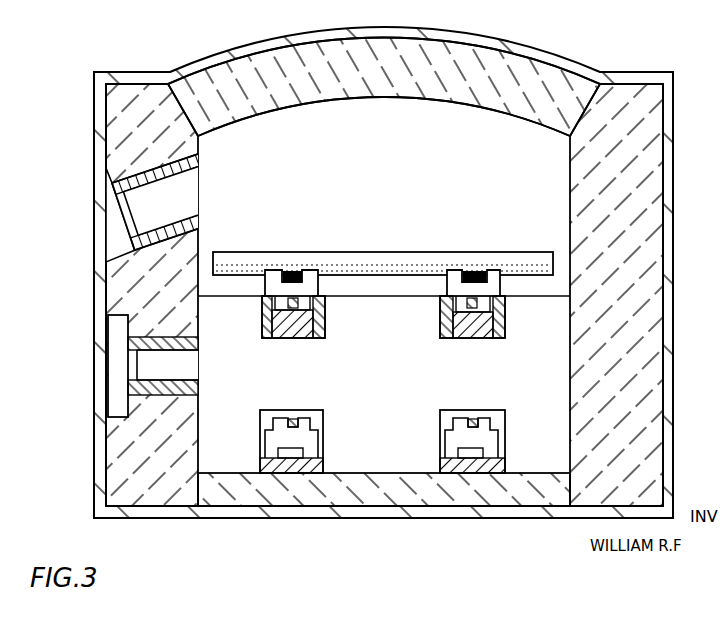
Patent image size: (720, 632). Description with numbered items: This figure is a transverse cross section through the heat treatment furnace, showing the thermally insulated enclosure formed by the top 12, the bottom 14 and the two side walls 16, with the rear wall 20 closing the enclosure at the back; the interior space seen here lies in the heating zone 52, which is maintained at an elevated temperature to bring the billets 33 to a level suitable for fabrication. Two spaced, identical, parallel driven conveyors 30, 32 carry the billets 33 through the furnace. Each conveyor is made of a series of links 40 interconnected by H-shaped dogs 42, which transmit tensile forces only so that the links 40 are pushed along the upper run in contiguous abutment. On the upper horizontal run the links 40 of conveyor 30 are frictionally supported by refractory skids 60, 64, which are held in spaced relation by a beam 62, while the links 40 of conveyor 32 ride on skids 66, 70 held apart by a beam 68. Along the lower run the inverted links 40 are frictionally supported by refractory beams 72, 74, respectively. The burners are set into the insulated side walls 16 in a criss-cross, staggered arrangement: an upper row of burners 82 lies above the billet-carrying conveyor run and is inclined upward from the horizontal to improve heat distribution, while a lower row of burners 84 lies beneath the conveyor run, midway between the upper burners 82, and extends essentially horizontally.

The top 12 is at (317, 36).
The bottom 14 is at (286, 510).
The side walls 16 is at (95, 158).
The rear wall 20 is at (324, 147).
The conveyor 30 is at (292, 268).
The conveyor 32 is at (472, 268).
The billets 33 is at (395, 260).
The links 40 is at (272, 288).
The dogs 42 is at (299, 300).
The heating zone 52 is at (503, 133).
The skid 60 is at (268, 326).
The beam 62 is at (293, 339).
The skid 64 is at (321, 327).
The skid 66 is at (447, 326).
The beam 68 is at (480, 339).
The skid 70 is at (501, 328).
The beam 72 is at (316, 470).
The beam 74 is at (497, 468).
The burners 82 is at (198, 206).
The burners 84 is at (190, 389).